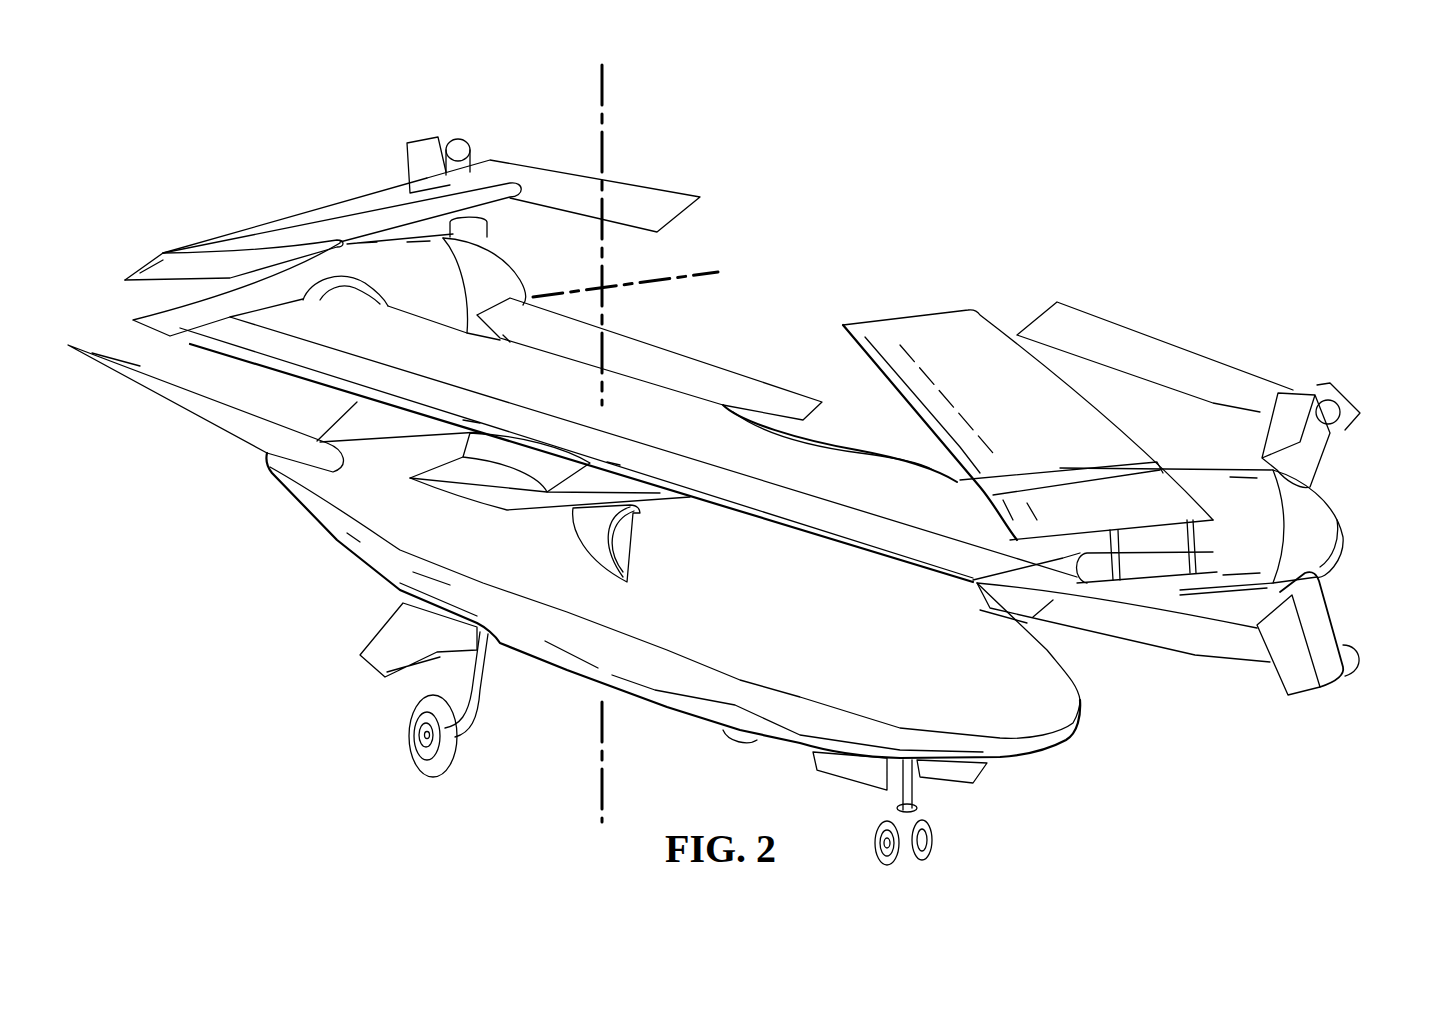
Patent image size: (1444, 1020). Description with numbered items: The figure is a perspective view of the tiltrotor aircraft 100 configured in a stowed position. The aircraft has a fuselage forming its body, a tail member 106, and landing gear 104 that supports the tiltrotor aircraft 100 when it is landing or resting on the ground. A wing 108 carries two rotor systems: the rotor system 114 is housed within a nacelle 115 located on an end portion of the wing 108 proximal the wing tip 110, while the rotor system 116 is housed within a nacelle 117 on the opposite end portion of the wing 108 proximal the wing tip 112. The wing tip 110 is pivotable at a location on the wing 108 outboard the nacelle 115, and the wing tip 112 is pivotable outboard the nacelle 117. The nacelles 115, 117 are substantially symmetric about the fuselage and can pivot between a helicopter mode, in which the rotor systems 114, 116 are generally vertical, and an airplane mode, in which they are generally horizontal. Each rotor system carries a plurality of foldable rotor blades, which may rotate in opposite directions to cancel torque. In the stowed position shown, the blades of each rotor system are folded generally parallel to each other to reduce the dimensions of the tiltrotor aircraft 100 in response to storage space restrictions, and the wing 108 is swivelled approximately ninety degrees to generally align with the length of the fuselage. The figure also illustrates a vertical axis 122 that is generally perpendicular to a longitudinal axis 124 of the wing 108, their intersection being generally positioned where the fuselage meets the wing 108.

The tiltrotor aircraft 100 is at (903, 161).
The landing gear 104 is at (404, 740).
The tail member 106 is at (167, 398).
The wing 108 is at (783, 500).
The wing tip 110 is at (934, 323).
The wing tip 112 is at (318, 216).
The rotor system 114 is at (1356, 510).
The nacelle 115 is at (1220, 597).
The rotor system 116 is at (404, 125).
The nacelle 117 is at (397, 262).
The vertical axis 122 is at (601, 93).
The longitudinal axis 124 is at (706, 271).